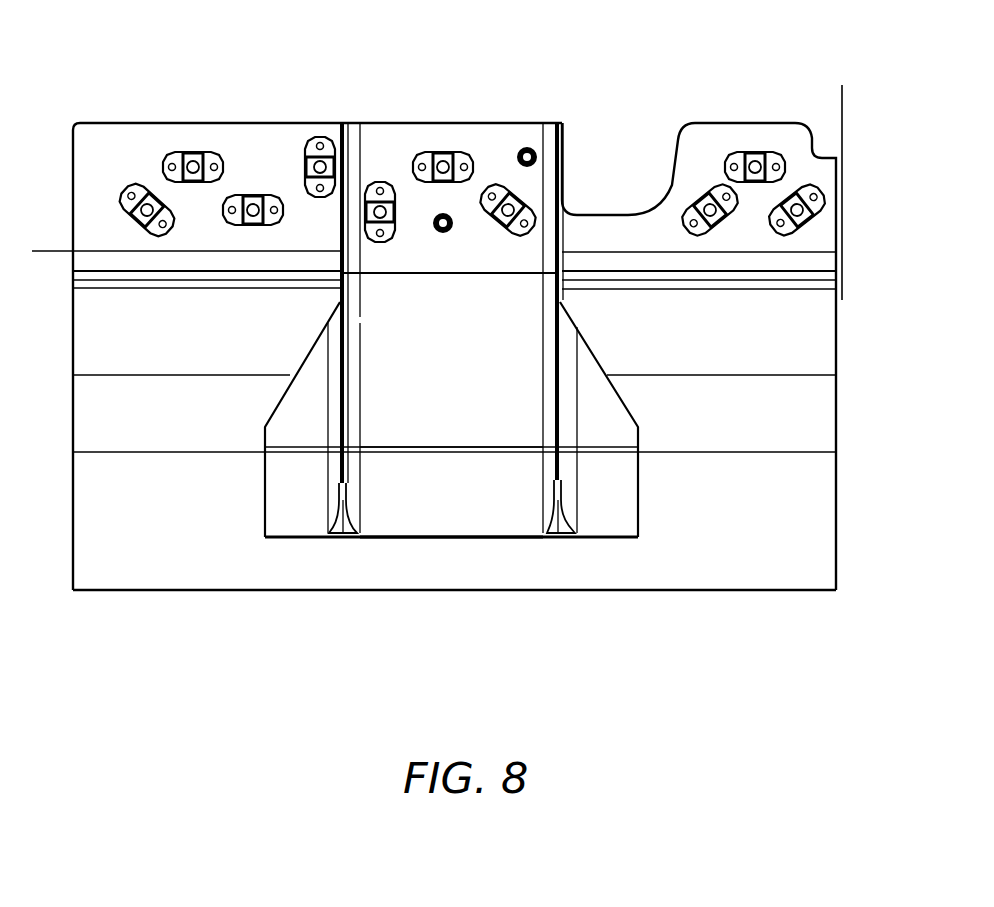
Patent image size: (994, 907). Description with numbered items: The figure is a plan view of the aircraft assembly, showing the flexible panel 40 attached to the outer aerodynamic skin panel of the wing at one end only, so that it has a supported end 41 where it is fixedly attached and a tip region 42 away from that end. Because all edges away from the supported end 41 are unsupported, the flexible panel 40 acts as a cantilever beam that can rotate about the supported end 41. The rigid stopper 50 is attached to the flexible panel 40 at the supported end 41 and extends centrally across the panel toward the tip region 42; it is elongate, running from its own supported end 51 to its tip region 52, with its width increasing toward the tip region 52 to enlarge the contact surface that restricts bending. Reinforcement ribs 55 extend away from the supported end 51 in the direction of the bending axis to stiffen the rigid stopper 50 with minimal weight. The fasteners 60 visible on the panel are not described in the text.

The flexible panel 40 is at (182, 565).
The supported end 41 is at (262, 153).
The tip region 42 is at (758, 568).
The rigid stopper 50 is at (422, 510).
The supported end 51 is at (500, 152).
The tip region 52 is at (492, 510).
The reinforcement ribs 55 is at (340, 535).
The fastener clip 60 is at (443, 150).